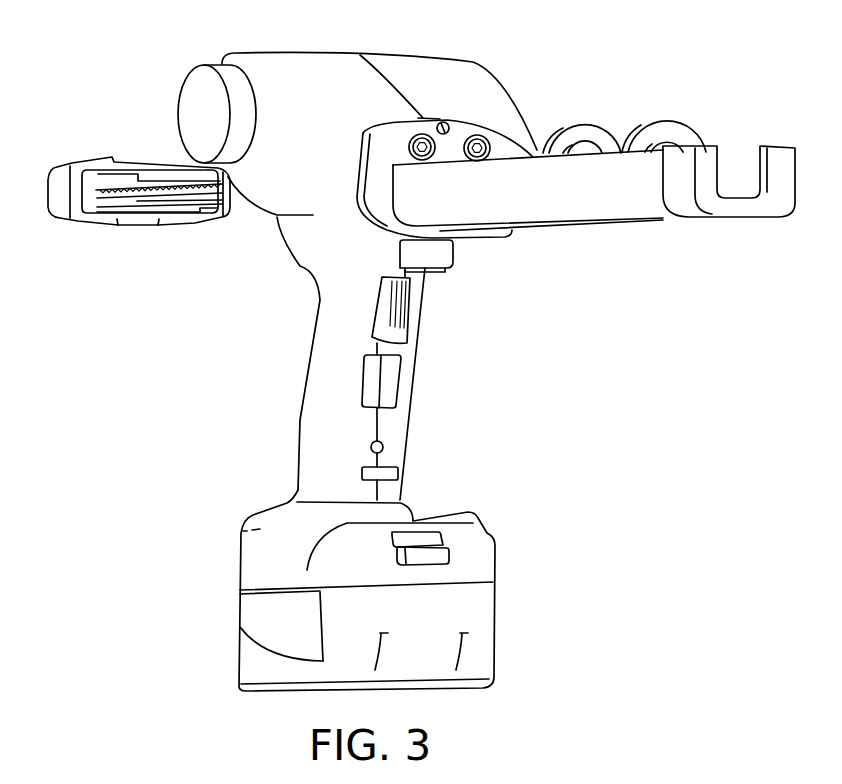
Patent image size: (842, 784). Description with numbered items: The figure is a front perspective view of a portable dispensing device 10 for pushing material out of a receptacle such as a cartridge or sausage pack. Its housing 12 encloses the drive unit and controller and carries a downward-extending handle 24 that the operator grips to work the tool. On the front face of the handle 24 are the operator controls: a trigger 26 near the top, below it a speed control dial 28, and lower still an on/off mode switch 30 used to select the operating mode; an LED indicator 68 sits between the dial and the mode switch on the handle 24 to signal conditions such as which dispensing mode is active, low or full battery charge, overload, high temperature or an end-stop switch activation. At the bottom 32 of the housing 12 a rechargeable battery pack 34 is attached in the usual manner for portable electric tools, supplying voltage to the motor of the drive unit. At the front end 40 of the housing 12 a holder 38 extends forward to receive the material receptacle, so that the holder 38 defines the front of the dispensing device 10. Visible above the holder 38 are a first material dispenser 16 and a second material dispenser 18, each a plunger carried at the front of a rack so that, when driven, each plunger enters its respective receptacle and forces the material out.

The dispensing device 10 is at (154, 344).
The housing 12 is at (468, 83).
The material dispenser 16 is at (588, 132).
The second material dispenser 18 is at (667, 128).
The handle 24 is at (323, 424).
The trigger 26 is at (397, 307).
The speed control dial 28 is at (387, 385).
The on/off mode switch 30 is at (387, 472).
The bottom of the housing 32 is at (497, 557).
The battery pack 34 is at (473, 617).
The holder 38 is at (600, 193).
The front end of the housing 40 is at (487, 105).
The LED indicator 68 is at (383, 446).